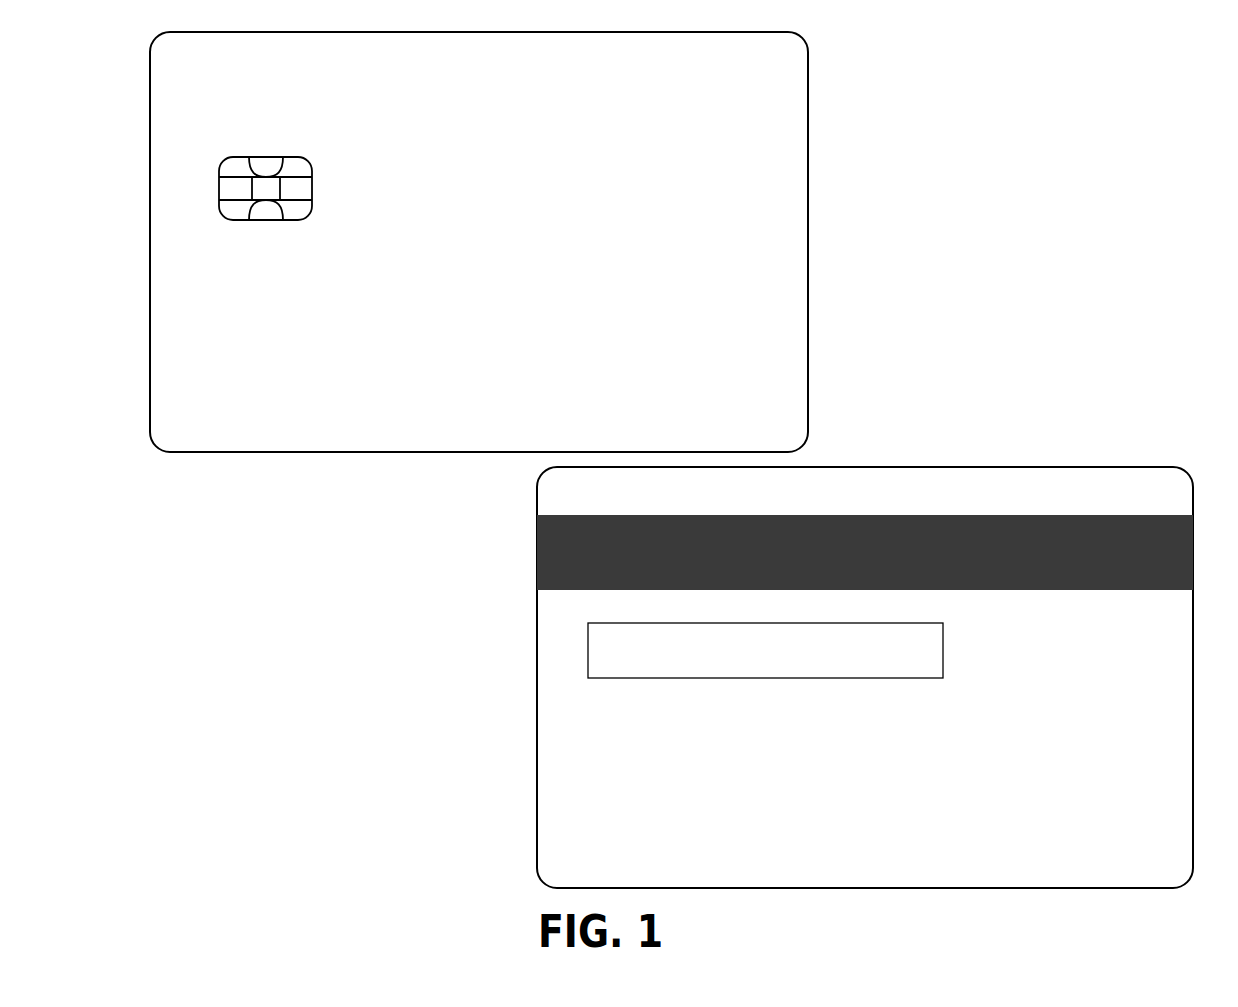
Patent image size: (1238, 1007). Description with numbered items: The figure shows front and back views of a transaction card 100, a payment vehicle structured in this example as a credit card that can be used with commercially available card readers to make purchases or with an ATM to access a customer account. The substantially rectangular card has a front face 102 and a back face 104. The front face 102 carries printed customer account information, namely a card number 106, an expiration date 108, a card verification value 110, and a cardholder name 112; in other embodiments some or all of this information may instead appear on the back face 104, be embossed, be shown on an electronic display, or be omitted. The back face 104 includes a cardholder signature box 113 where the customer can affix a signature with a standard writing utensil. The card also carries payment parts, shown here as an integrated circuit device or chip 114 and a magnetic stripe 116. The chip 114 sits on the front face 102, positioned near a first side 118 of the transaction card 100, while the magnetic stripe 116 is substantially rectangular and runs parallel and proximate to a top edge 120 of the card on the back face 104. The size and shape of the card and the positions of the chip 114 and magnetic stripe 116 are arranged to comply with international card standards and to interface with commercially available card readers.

The transaction card 100 is at (447, 579).
The front face 102 is at (788, 163).
The back face 104 is at (488, 728).
The card number 106 is at (297, 258).
The expiration date 108 is at (505, 347).
The card verification value 110 is at (700, 330).
The cardholder name 112 is at (222, 410).
The cardholder signature box 113 is at (953, 651).
The integrated circuit device 114 is at (265, 155).
The magnetic stripe 116 is at (537, 555).
The first side 118 is at (500, 242).
The top edge 120 is at (797, 665).